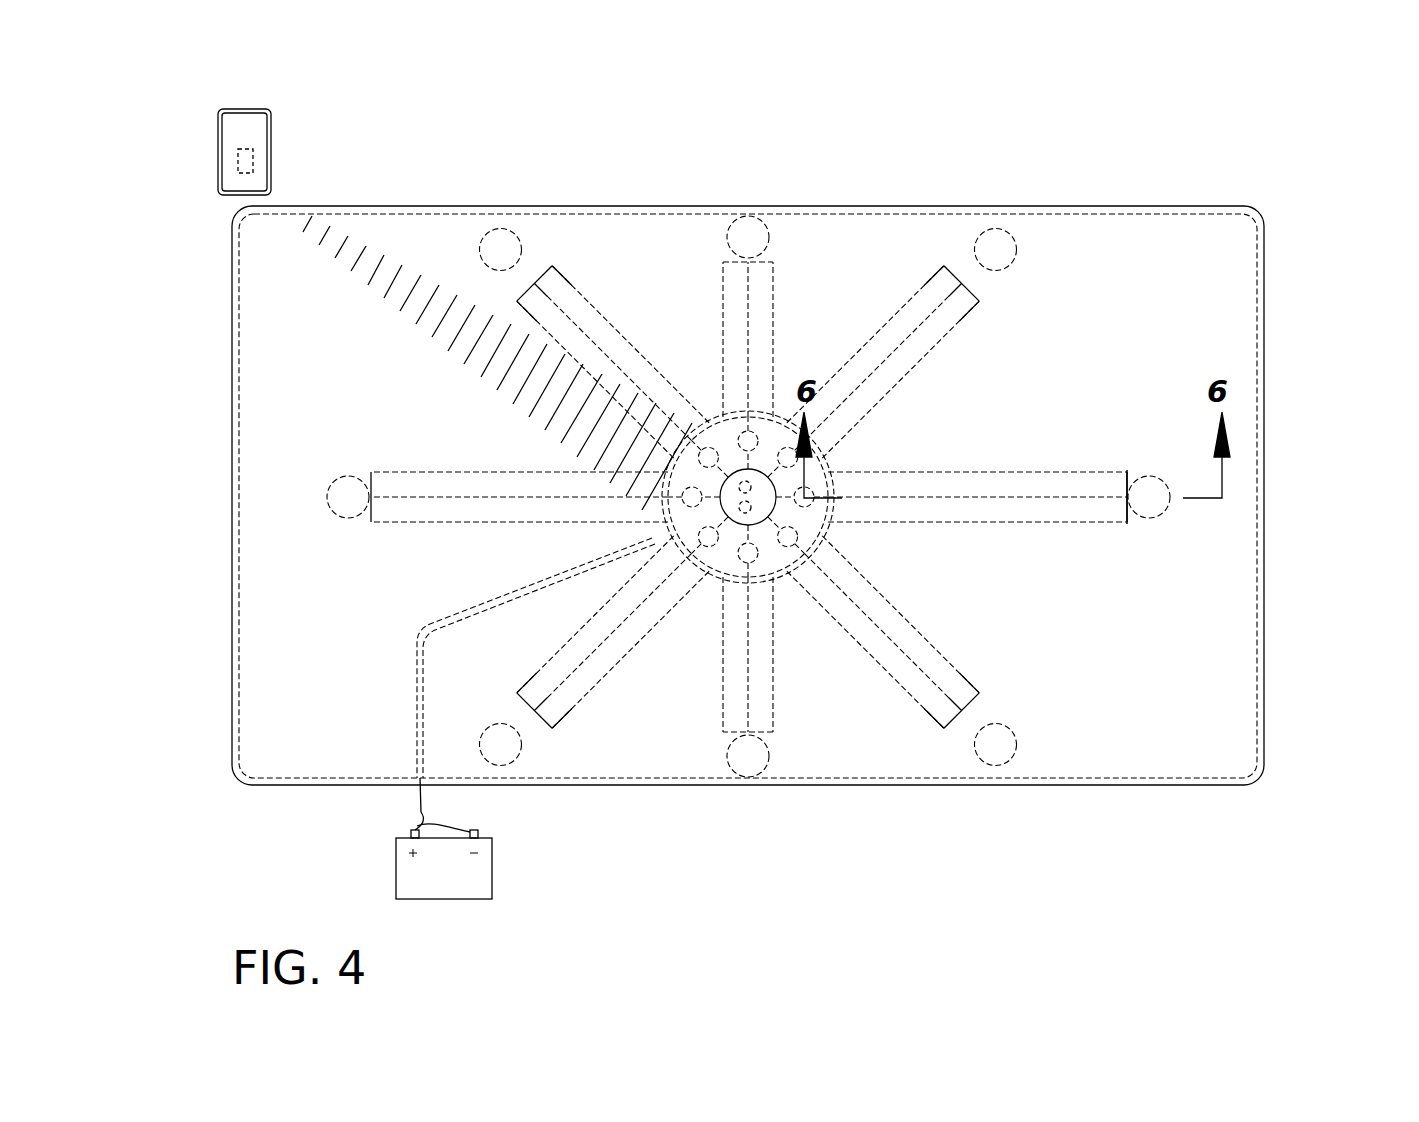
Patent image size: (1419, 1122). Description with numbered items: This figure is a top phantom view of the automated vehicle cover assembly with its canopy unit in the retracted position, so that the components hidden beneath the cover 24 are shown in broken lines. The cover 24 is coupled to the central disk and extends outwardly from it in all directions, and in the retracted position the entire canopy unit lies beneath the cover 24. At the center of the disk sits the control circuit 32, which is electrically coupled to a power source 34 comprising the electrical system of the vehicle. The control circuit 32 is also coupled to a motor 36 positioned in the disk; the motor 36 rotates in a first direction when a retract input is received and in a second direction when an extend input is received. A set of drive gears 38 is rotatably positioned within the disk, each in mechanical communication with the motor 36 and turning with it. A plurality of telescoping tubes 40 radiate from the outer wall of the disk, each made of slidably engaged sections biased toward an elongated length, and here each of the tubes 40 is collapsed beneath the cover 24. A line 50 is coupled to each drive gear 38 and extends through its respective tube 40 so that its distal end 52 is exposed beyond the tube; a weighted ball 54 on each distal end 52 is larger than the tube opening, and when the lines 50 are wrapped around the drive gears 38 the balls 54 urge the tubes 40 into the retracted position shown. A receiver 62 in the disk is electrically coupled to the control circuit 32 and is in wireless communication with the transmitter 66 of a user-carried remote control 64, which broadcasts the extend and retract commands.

The cover 24 is at (524, 206).
The control circuit 32 is at (750, 468).
The power source 34 is at (493, 860).
The motor 36 is at (757, 523).
The drive gears 38 is at (750, 431).
The tubes 40 is at (845, 400).
The lines 50 is at (548, 296).
The distal end 52 is at (1130, 498).
The balls 54 is at (753, 215).
The receiver 62 is at (737, 497).
The remote control 64 is at (238, 108).
The transmitter 66 is at (256, 152).